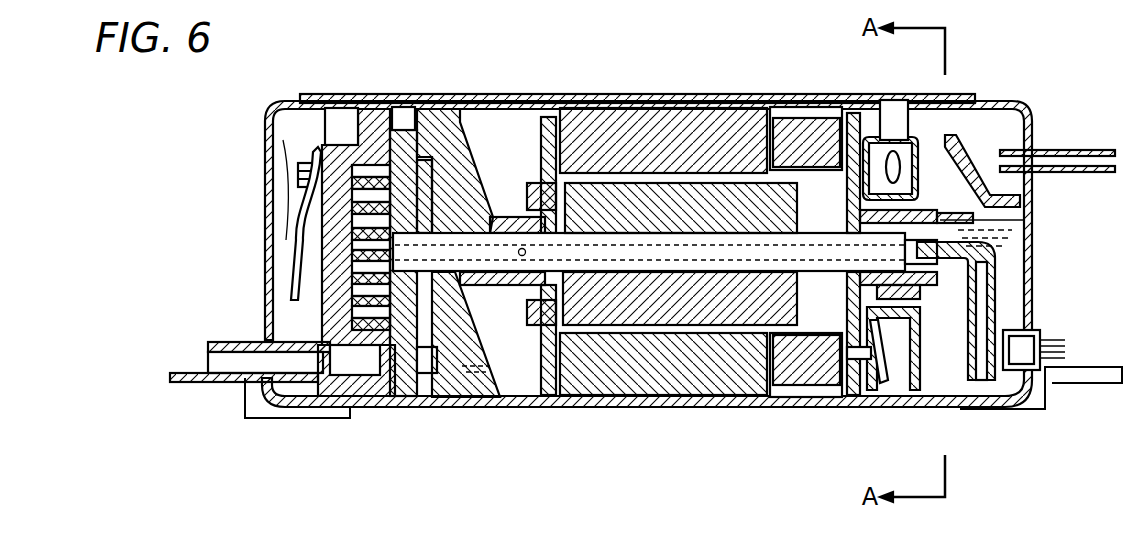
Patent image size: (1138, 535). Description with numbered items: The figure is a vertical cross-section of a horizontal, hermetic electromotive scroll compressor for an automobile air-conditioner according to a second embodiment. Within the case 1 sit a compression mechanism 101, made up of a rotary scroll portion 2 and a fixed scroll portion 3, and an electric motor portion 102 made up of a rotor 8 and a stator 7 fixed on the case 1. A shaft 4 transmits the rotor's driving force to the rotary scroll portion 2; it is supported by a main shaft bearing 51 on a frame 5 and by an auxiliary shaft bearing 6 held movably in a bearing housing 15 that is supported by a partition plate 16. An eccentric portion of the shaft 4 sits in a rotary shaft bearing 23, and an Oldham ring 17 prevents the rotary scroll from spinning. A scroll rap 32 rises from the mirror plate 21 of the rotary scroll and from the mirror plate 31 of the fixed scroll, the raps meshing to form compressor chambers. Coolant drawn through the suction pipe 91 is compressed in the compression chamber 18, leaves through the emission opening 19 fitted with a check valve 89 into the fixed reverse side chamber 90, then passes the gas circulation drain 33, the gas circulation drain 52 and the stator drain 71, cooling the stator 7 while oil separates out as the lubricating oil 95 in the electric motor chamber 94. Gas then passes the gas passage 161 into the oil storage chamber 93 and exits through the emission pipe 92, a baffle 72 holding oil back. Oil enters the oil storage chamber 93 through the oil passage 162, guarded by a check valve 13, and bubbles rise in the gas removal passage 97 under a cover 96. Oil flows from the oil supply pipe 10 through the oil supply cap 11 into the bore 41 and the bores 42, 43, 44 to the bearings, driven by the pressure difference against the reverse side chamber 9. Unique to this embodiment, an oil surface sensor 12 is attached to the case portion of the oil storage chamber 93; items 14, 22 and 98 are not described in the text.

The case 1 is at (660, 104).
The rotary scroll portion 2 is at (410, 127).
The fixed scroll portion 3 is at (335, 130).
The shaft 4 is at (700, 210).
The frame 5 is at (460, 130).
The auxiliary shaft bearing 6 is at (887, 165).
The stator 7 is at (590, 135).
The rotor 8 is at (722, 392).
The reverse side chamber 9 is at (460, 330).
The oil supply pipe 10 is at (990, 300).
The oil supply cap 11 is at (1003, 218).
The oil surface sensor 12 is at (1040, 333).
The check valve 13 is at (868, 372).
The screw 14 is at (890, 352).
The bearing housing 15 is at (895, 108).
The partition plate 16 is at (828, 135).
The Oldham ring 17 is at (425, 330).
The compression chamber 18 is at (352, 352).
The emission opening 19 is at (315, 250).
The mirror plate 21 is at (405, 345).
The sleeve 22 is at (390, 350).
The rotary shaft bearing 23 is at (322, 280).
The mirror plate 31 is at (315, 150).
The scroll rap 32 is at (363, 198).
The gas circulation drain 33 is at (383, 100).
The bore 41 is at (783, 112).
The bore 42 is at (522, 256).
The bore 43 is at (540, 285).
The bore 44 is at (868, 238).
The main shaft bearing 51 is at (527, 195).
The gas circulation drain 52 is at (437, 108).
The stator drain 71 is at (632, 120).
The baffle 72 is at (1040, 150).
The check valve 89 is at (325, 300).
The fixed reverse side chamber 90 is at (293, 220).
The suction pipe 91 is at (240, 343).
The emission pipe 92 is at (1085, 160).
The oil storage chamber 93 is at (978, 365).
The electric motor chamber 94 is at (800, 408).
The lubricating oil 95 is at (1012, 258).
The cover 96 is at (965, 132).
The gas removal passage 97 is at (893, 332).
The base frame 98 is at (255, 418).
The compression mechanism 101 is at (377, 408).
The electric motor portion 102 is at (694, 407).
The gas passage 161 is at (853, 140).
The oil passage 162 is at (838, 396).